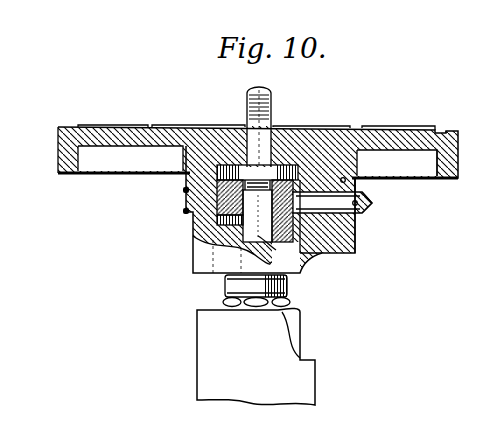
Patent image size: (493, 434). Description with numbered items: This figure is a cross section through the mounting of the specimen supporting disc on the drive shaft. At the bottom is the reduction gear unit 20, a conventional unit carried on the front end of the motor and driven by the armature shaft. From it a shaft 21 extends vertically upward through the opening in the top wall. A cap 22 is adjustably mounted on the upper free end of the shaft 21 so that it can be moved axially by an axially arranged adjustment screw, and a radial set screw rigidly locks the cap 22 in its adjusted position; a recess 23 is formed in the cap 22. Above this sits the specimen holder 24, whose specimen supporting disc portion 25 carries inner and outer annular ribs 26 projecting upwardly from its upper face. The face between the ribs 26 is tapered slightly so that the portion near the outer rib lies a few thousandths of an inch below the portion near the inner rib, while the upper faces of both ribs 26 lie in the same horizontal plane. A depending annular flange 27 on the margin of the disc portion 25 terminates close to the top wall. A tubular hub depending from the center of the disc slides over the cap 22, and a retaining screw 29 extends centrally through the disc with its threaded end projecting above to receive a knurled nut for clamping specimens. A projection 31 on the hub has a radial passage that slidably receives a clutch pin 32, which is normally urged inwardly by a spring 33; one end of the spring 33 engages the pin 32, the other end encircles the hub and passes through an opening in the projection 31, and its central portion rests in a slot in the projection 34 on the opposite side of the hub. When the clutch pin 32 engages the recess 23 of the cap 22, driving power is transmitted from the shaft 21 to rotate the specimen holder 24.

The reduction gear unit 20 is at (278, 368).
The shaft 21 is at (300, 275).
The cap 22 is at (357, 232).
The recess 23 is at (292, 211).
The specimen holder 24 is at (53, 137).
The specimen supporting disc portion 25 is at (397, 134).
The annular ribs 26 is at (80, 126).
The depending annular flange 27 is at (461, 155).
The retaining screw 29 is at (271, 100).
The projection 31 is at (357, 185).
The clutch pin 32 is at (372, 208).
The spring 33 is at (185, 191).
The projection 34 is at (186, 212).